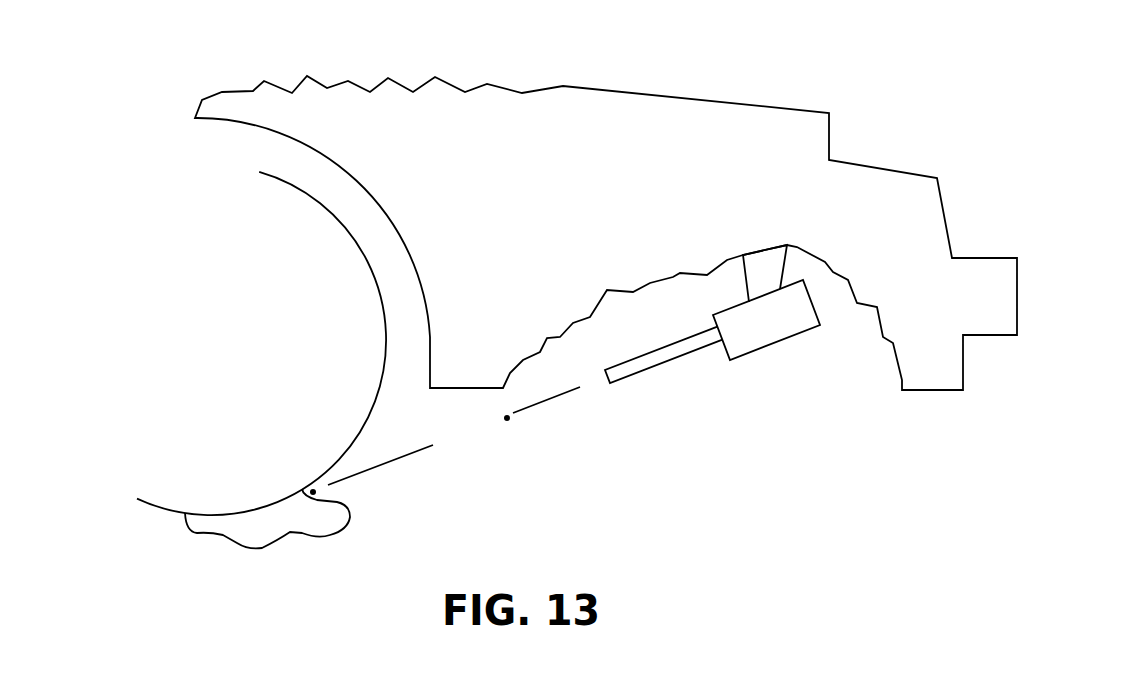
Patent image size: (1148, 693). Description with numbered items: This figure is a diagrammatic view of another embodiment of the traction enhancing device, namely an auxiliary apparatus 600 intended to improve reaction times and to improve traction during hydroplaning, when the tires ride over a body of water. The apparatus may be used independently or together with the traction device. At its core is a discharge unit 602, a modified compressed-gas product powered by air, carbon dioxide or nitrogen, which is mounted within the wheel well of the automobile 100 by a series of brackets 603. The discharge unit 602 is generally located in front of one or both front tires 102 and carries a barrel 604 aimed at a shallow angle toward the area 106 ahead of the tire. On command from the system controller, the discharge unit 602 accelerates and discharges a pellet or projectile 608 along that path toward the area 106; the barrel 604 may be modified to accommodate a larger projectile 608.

The automobile 100 is at (875, 172).
The front tire 102 is at (286, 375).
The area 106 is at (343, 522).
The auxiliary apparatus 600 is at (784, 348).
The discharge unit 602 is at (777, 340).
The brackets 603 is at (747, 280).
The barrel 604 is at (667, 363).
The projectile 608 is at (509, 420).